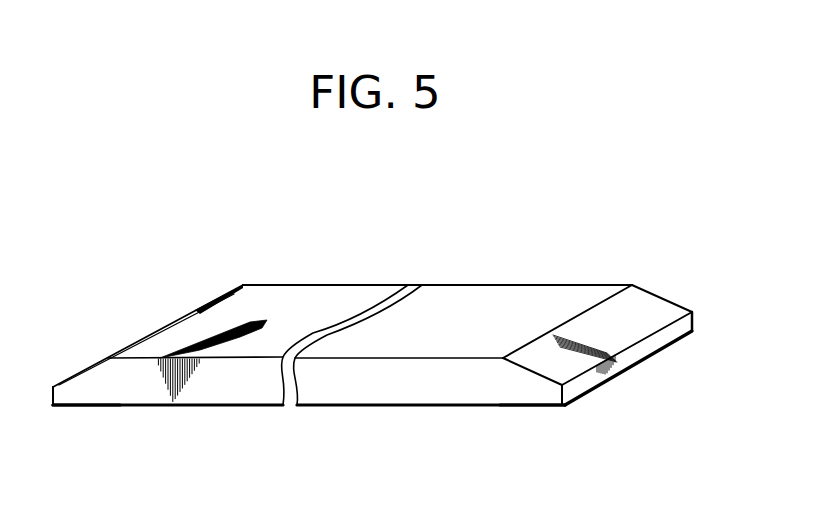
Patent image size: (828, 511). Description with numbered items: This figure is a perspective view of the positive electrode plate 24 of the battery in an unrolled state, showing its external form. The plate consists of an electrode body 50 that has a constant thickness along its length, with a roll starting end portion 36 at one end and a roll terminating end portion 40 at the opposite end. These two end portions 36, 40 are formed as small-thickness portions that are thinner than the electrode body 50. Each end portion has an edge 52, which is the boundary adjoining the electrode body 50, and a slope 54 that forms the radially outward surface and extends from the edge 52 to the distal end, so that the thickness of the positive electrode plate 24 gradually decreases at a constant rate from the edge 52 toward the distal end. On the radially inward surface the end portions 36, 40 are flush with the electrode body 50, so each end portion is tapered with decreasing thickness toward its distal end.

The positive electrode plate 24 is at (535, 231).
The electrode body 50 is at (452, 308).
The edge 52 is at (203, 305).
The slope 54 is at (133, 337).
The roll starting end portion 36 is at (85, 393).
The roll terminating end portion 40 is at (537, 393).